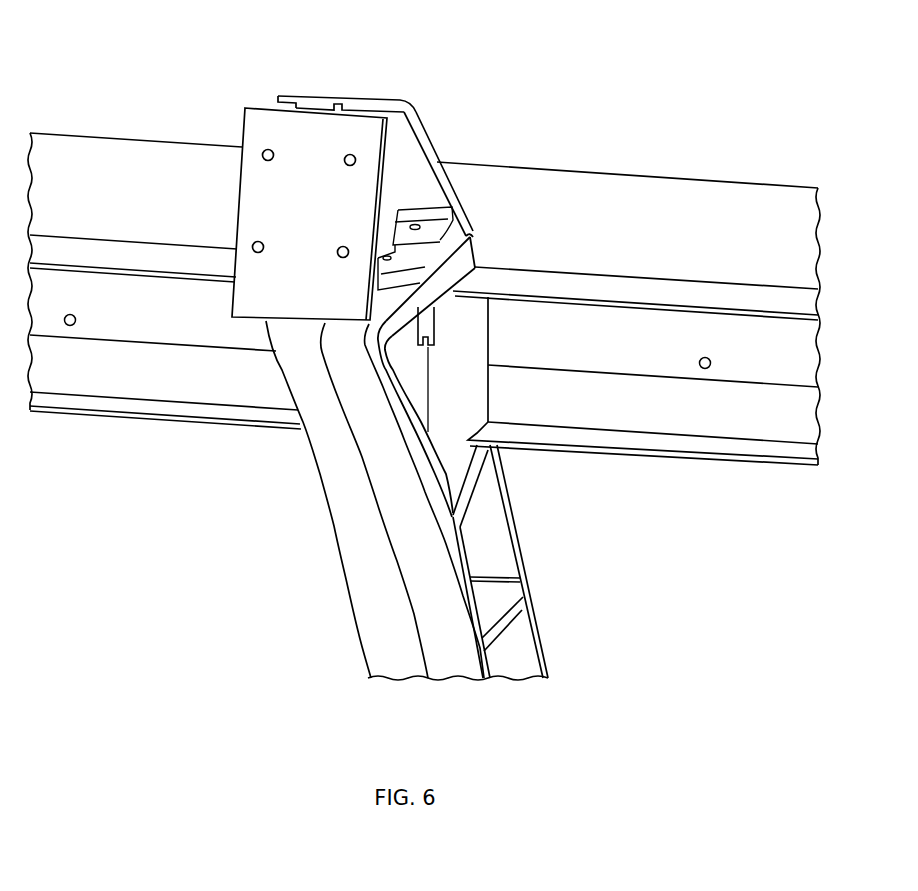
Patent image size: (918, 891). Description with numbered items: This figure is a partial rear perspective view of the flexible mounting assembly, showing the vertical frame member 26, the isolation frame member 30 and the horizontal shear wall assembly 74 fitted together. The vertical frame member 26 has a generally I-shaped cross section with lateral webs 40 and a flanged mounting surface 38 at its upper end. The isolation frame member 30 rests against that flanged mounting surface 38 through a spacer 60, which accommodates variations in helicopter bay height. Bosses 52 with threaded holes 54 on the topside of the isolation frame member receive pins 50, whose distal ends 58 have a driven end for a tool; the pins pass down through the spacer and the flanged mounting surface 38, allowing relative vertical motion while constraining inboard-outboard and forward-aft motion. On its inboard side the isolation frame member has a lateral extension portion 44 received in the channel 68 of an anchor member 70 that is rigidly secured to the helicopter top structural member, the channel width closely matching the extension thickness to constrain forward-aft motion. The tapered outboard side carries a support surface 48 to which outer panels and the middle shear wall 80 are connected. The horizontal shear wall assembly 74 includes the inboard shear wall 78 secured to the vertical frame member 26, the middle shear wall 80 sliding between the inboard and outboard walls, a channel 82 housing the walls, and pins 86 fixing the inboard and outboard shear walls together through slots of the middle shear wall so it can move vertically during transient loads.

The vertical frame member 26 is at (449, 687).
The isolation frame member 30 is at (446, 228).
The flanged mounting surface 38 is at (438, 300).
The lateral webs 40 is at (475, 483).
The lateral extension portion 44 is at (318, 102).
The support surface 48 is at (430, 138).
The pins 50 is at (435, 328).
The bosses 52 is at (472, 236).
The threaded holes 54 is at (440, 240).
The distal ends 58 is at (426, 350).
The spacer 60 is at (478, 248).
The channel 68 is at (296, 103).
The anchor member 70 is at (298, 213).
The horizontal shear wall assembly 74 is at (757, 390).
The inboard shear wall 78 is at (140, 318).
The middle shear wall 80 is at (650, 243).
The channel 82 is at (140, 383).
The pins 86 is at (66, 327).